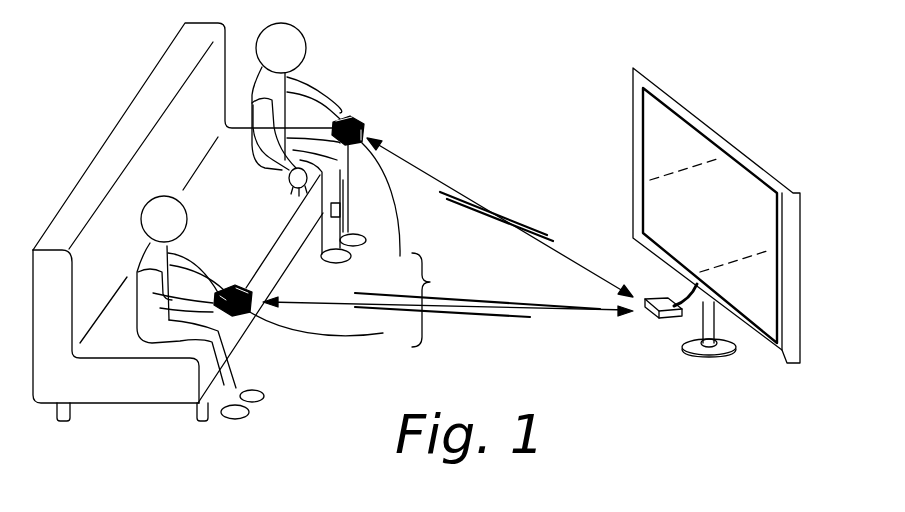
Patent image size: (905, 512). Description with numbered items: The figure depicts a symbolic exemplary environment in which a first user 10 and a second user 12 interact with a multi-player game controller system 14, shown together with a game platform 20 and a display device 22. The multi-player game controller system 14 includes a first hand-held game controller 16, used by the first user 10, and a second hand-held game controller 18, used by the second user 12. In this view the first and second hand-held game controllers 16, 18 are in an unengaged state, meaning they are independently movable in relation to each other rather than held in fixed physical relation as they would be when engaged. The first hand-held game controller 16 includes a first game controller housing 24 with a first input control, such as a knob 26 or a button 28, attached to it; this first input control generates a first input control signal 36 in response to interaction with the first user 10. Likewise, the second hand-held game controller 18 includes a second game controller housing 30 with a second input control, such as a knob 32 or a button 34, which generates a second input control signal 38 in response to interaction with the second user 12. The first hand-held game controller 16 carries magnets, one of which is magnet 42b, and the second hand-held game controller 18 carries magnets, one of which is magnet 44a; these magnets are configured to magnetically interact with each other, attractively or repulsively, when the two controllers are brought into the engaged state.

The first user 10 is at (297, 34).
The second user 12 is at (184, 215).
The multi-player game controller system 14 is at (434, 300).
The first hand-held game controller 16 is at (387, 215).
The second hand-held game controller 18 is at (328, 328).
The game platform 20 is at (663, 320).
The display device 22 is at (660, 163).
The first game controller housing 24 is at (366, 125).
The knob 26 is at (358, 121).
The button 28 is at (343, 118).
The second game controller housing 30 is at (252, 295).
The knob 32 is at (240, 284).
The button 34 is at (230, 285).
The first input control signal 36 is at (450, 183).
The second input control signal 38 is at (518, 303).
The magnet 42b is at (314, 118).
The magnet 44a is at (243, 335).